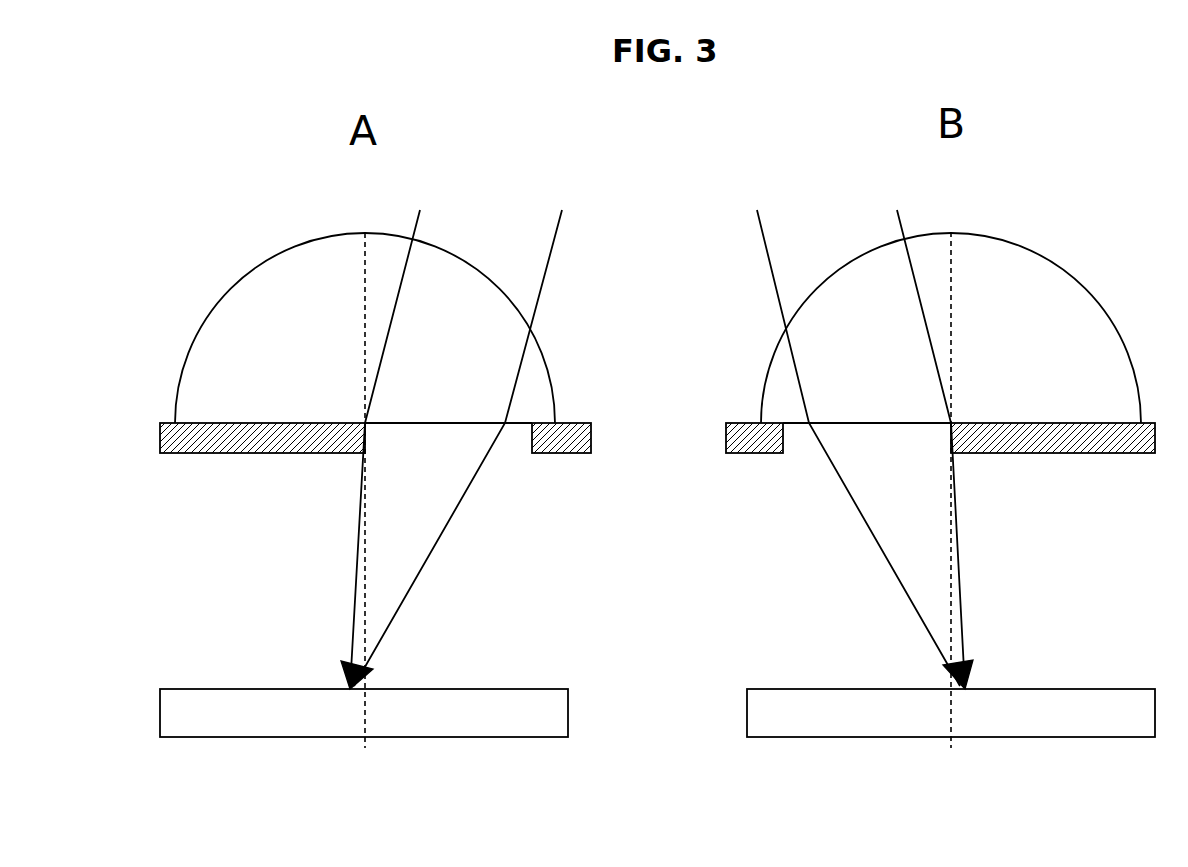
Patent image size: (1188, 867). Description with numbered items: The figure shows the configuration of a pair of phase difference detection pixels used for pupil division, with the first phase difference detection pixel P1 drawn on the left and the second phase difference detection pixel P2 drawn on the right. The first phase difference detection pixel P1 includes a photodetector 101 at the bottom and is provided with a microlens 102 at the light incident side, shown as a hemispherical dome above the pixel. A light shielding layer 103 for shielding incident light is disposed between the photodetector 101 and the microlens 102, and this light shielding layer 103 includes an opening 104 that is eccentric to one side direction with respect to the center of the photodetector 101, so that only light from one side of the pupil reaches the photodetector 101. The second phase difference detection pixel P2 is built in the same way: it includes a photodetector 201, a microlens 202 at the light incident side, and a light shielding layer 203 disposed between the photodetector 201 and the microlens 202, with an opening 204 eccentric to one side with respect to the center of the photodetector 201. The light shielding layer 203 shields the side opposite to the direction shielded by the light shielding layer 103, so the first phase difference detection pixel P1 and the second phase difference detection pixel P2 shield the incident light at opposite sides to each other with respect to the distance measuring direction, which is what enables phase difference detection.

In FIG. 3A, the photodetector 101 is at (515, 689).
In FIG. 3A, the microlens 102 is at (238, 278).
In FIG. 3A, the light shielding layer 103 is at (260, 453).
In FIG. 3A, the opening 104 is at (532, 437).
In FIG. 3A, the first phase difference detection pixel P1 is at (466, 202).
In FIG. 3B, the photodetector 201 is at (845, 689).
In FIG. 3B, the microlens 202 is at (1077, 280).
In FIG. 3B, the light shielding layer 203 is at (1082, 453).
In FIG. 3B, the opening 204 is at (783, 440).
In FIG. 3B, the second phase difference detection pixel P2 is at (1026, 197).